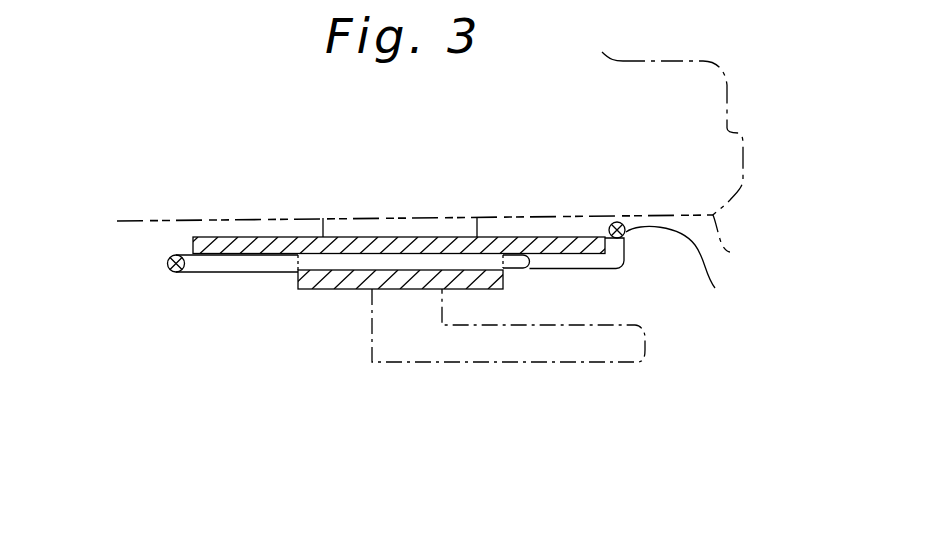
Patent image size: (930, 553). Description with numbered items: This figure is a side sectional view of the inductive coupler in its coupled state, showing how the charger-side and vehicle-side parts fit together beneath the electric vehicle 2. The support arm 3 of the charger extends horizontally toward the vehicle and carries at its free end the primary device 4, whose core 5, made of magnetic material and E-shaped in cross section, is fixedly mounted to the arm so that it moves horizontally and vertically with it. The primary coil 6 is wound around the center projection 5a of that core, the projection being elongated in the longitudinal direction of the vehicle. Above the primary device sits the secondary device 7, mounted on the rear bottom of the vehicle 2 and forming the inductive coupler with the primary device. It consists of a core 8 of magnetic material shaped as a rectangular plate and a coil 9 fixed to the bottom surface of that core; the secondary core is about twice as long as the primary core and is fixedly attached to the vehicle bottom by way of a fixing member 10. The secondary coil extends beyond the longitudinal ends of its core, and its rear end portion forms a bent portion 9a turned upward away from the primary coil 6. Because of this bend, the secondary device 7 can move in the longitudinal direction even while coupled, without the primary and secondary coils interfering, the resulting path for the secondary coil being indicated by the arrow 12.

The electric vehicle 2 is at (677, 159).
The support arm 3 is at (372, 336).
The primary device 4 is at (338, 293).
The core 5 is at (504, 280).
The center projection 5a is at (513, 262).
The coil 6 is at (267, 273).
The secondary device 7 is at (546, 232).
The core 8 is at (385, 246).
The coil 9 is at (588, 274).
The bent portion 9a is at (695, 271).
The fixing member 10 is at (323, 232).
The arrow 12 is at (633, 258).